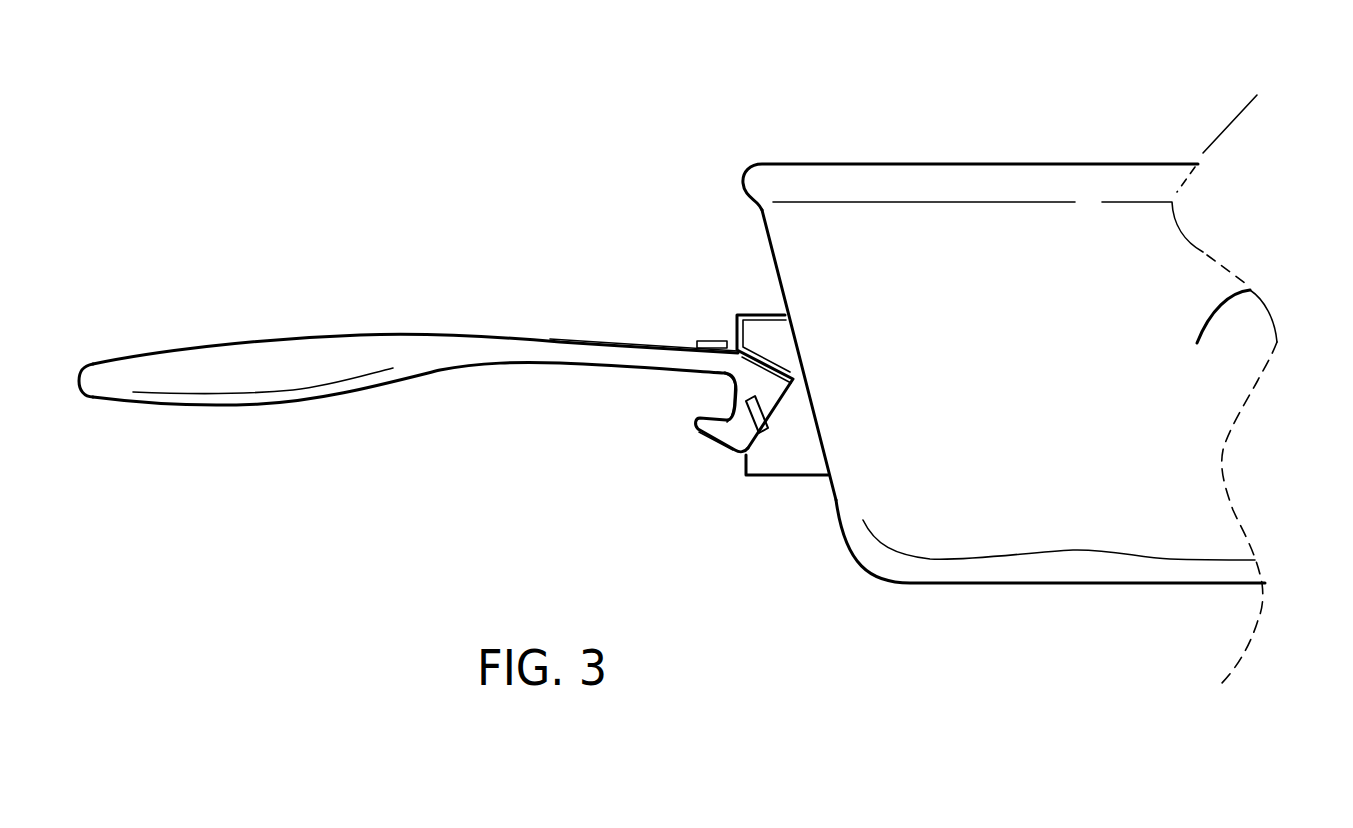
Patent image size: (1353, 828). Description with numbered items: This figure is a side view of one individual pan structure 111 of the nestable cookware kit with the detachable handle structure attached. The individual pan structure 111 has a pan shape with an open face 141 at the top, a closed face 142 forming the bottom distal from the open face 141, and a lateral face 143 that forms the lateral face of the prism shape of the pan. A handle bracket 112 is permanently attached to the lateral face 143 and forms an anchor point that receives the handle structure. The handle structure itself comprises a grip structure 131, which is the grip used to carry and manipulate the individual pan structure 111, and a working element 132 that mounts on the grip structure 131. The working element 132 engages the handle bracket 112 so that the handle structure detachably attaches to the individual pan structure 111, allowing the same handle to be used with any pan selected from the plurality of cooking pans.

The individual pan structure 111 is at (1012, 275).
The handle bracket 112 is at (790, 458).
The grip structure 131 is at (277, 350).
The working element 132 is at (697, 430).
The open face 141 is at (938, 164).
The closed face 142 is at (1097, 583).
The lateral face 143 is at (1250, 290).